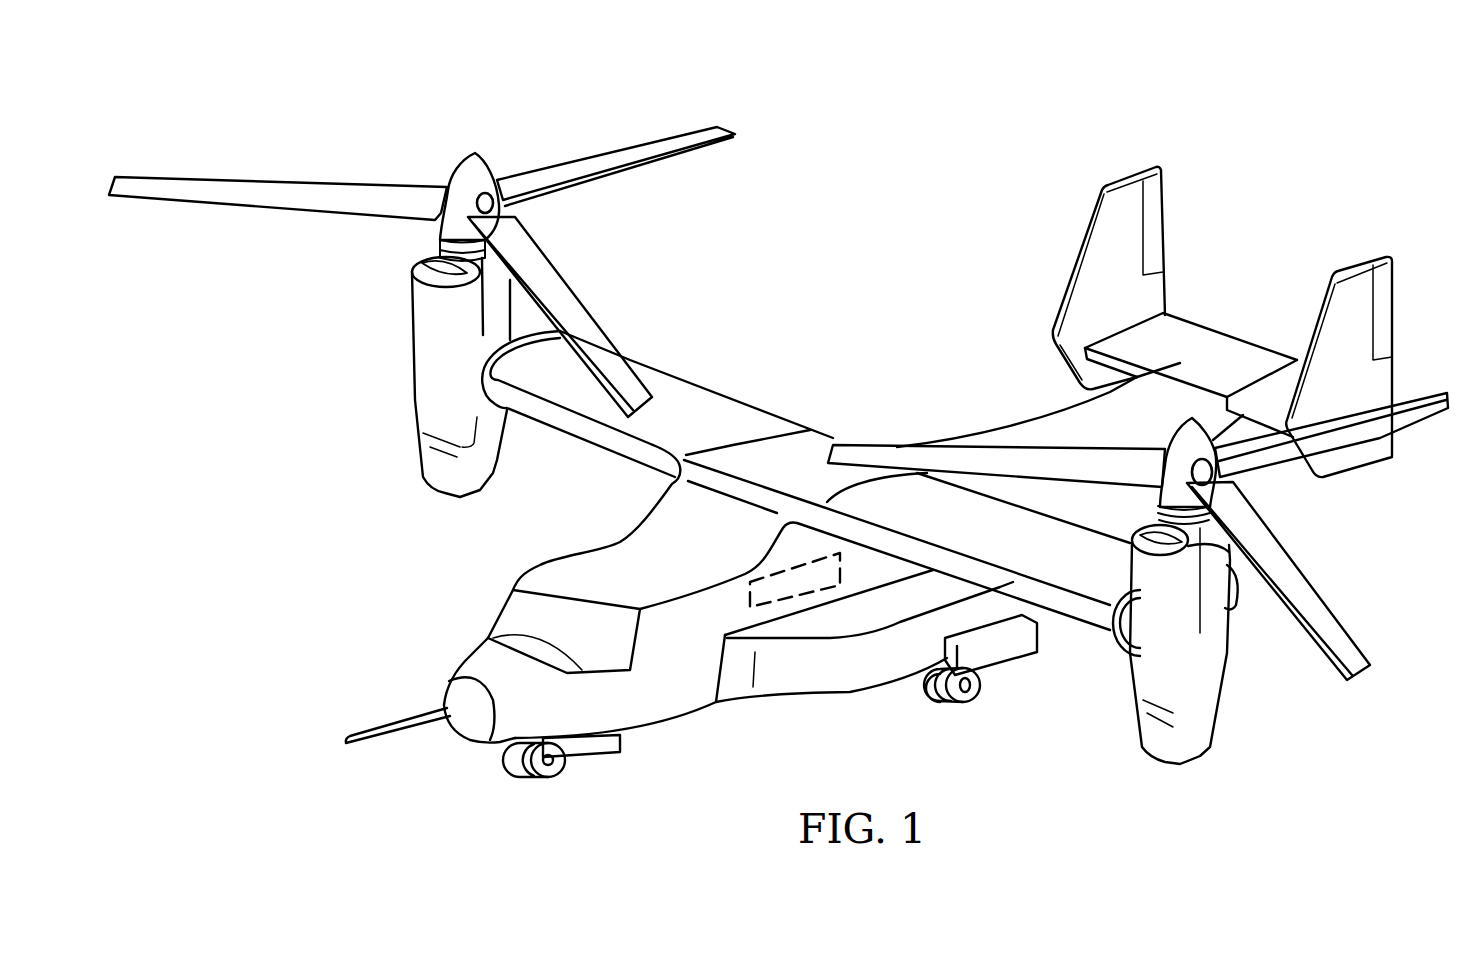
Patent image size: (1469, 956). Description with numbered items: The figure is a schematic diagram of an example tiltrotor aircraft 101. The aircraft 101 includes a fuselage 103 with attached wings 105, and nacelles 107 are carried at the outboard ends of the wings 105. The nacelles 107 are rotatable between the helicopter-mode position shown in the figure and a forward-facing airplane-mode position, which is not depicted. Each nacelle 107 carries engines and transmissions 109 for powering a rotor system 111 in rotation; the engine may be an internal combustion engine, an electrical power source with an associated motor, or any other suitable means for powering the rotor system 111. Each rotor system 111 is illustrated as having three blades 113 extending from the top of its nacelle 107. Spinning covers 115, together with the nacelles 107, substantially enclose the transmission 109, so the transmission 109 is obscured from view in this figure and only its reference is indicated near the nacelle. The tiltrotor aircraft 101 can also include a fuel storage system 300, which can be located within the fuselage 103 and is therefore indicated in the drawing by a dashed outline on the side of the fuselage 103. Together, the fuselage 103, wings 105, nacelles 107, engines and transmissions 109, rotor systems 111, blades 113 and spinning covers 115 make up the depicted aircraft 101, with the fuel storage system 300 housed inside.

The tiltrotor aircraft 101 is at (922, 220).
The fuselage 103 is at (773, 698).
The wings 105 is at (723, 397).
The nacelles 107 is at (412, 324).
The engines and transmissions 109 is at (385, 243).
The rotor systems 111 is at (450, 92).
The blades 113 is at (283, 178).
The spinning covers 115 is at (460, 170).
The fuel storage system 300 is at (752, 575).